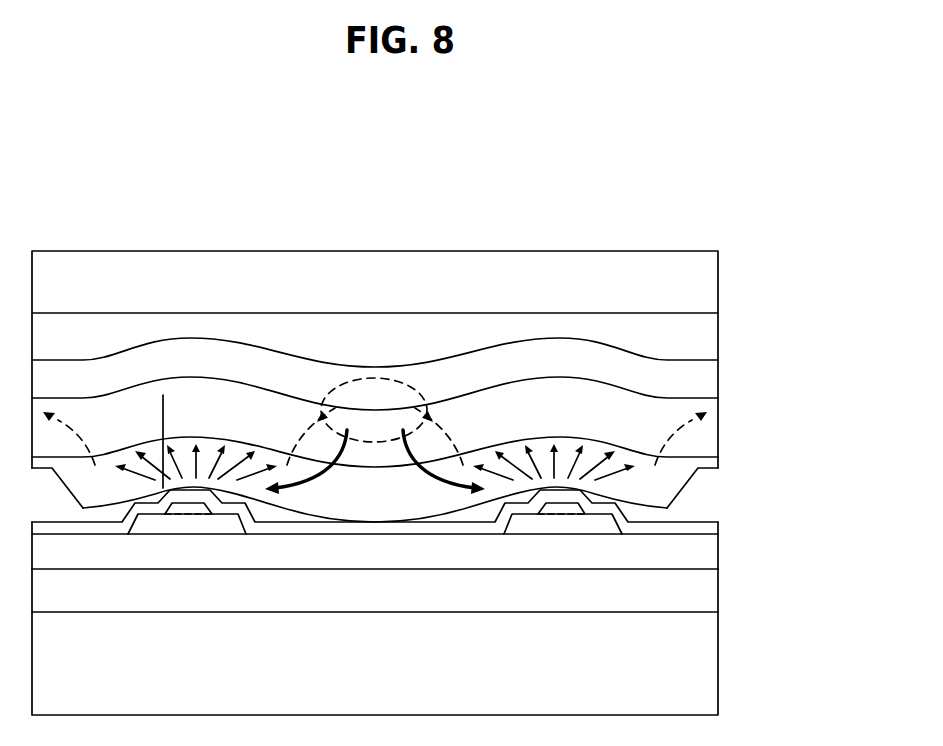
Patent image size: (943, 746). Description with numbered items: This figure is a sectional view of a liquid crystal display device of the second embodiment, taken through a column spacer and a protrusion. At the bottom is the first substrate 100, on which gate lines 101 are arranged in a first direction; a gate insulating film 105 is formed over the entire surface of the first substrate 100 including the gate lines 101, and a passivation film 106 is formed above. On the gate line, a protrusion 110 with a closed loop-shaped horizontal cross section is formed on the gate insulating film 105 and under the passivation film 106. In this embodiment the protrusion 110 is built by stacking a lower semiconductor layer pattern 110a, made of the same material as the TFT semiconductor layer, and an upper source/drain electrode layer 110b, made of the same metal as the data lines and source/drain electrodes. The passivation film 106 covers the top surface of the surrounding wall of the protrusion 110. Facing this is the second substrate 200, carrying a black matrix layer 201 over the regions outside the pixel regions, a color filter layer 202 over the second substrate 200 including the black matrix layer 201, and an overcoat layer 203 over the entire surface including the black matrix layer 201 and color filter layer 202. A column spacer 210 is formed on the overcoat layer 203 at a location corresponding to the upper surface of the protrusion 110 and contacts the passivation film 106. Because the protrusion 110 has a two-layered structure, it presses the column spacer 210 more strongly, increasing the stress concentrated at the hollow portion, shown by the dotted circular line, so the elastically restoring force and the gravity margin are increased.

The first substrate 100 is at (708, 672).
The gate lines 101 is at (708, 593).
The gate insulating film 105 is at (708, 555).
The passivation film 106 is at (708, 528).
The protrusion 110 is at (189, 604).
The lower semiconductor layer pattern 110a is at (150, 525).
The upper source/drain electrode layer 110b is at (193, 525).
The second substrate 200 is at (708, 282).
The black matrix layer 201 is at (708, 337).
The color filter layer 202 is at (708, 375).
The overcoat layer 203 is at (708, 432).
The column spacer 210 is at (680, 490).